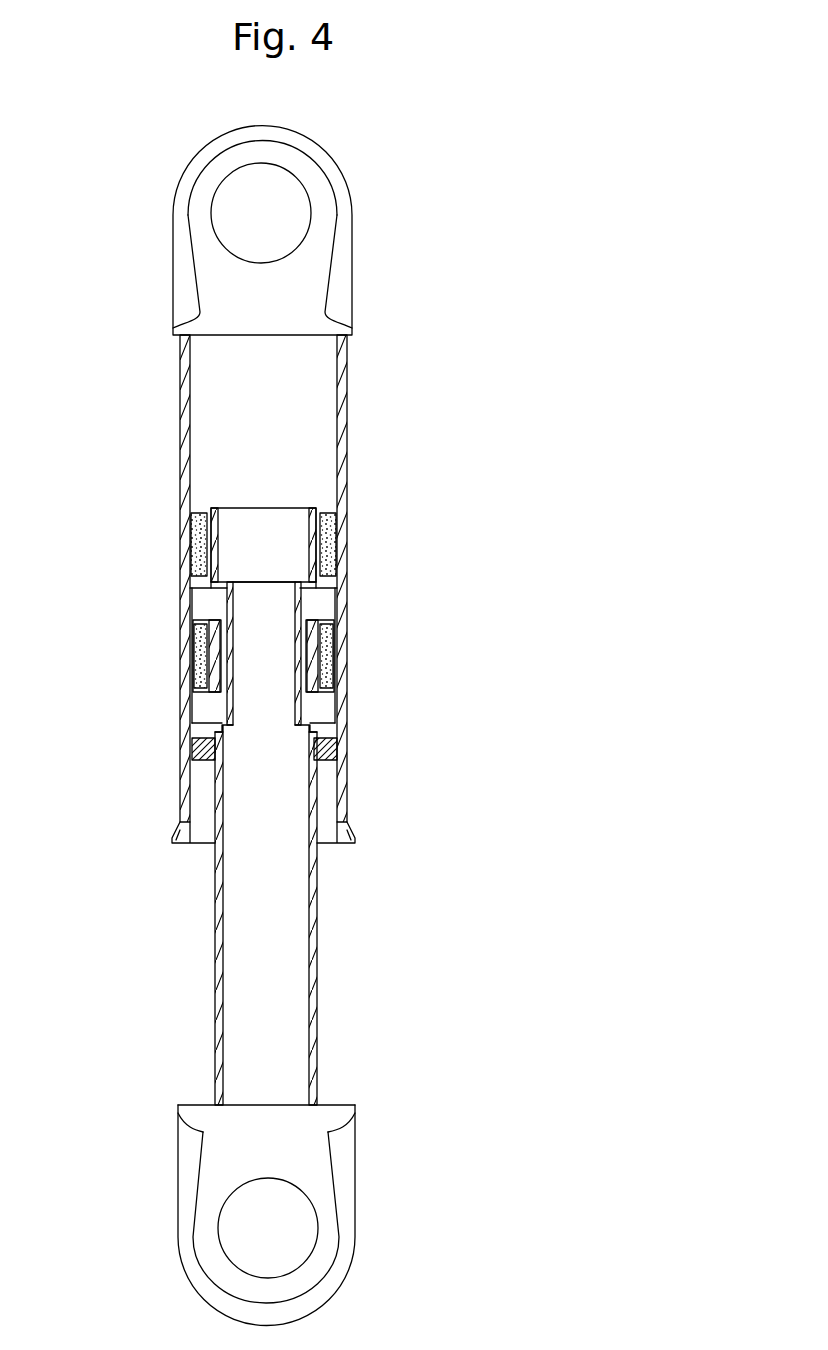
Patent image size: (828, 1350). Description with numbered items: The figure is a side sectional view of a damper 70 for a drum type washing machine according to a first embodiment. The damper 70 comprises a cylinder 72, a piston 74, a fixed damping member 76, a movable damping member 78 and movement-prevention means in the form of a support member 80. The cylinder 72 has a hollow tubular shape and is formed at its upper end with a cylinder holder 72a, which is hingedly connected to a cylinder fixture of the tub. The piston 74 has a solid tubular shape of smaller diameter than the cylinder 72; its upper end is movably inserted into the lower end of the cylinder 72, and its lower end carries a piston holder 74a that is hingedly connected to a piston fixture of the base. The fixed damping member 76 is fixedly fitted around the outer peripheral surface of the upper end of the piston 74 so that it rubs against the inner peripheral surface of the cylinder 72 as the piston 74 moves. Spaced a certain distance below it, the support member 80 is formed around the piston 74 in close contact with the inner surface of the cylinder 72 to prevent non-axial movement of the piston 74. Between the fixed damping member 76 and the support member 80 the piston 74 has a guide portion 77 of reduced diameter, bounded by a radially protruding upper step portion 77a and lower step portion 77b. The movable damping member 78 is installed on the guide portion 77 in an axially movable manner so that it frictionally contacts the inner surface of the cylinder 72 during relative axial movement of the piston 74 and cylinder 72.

The damper 70 is at (392, 221).
The cylinder 72 is at (177, 473).
The cylinder holder 72a is at (318, 286).
The piston 74 is at (208, 950).
The piston holder 74a is at (318, 1165).
The fixed damping member 76 is at (189, 553).
The guide portion 77 is at (190, 714).
The upper step portion 77a is at (305, 590).
The lower step portion 77b is at (306, 715).
The movable damping member 78 is at (190, 650).
The support member 80 is at (190, 752).